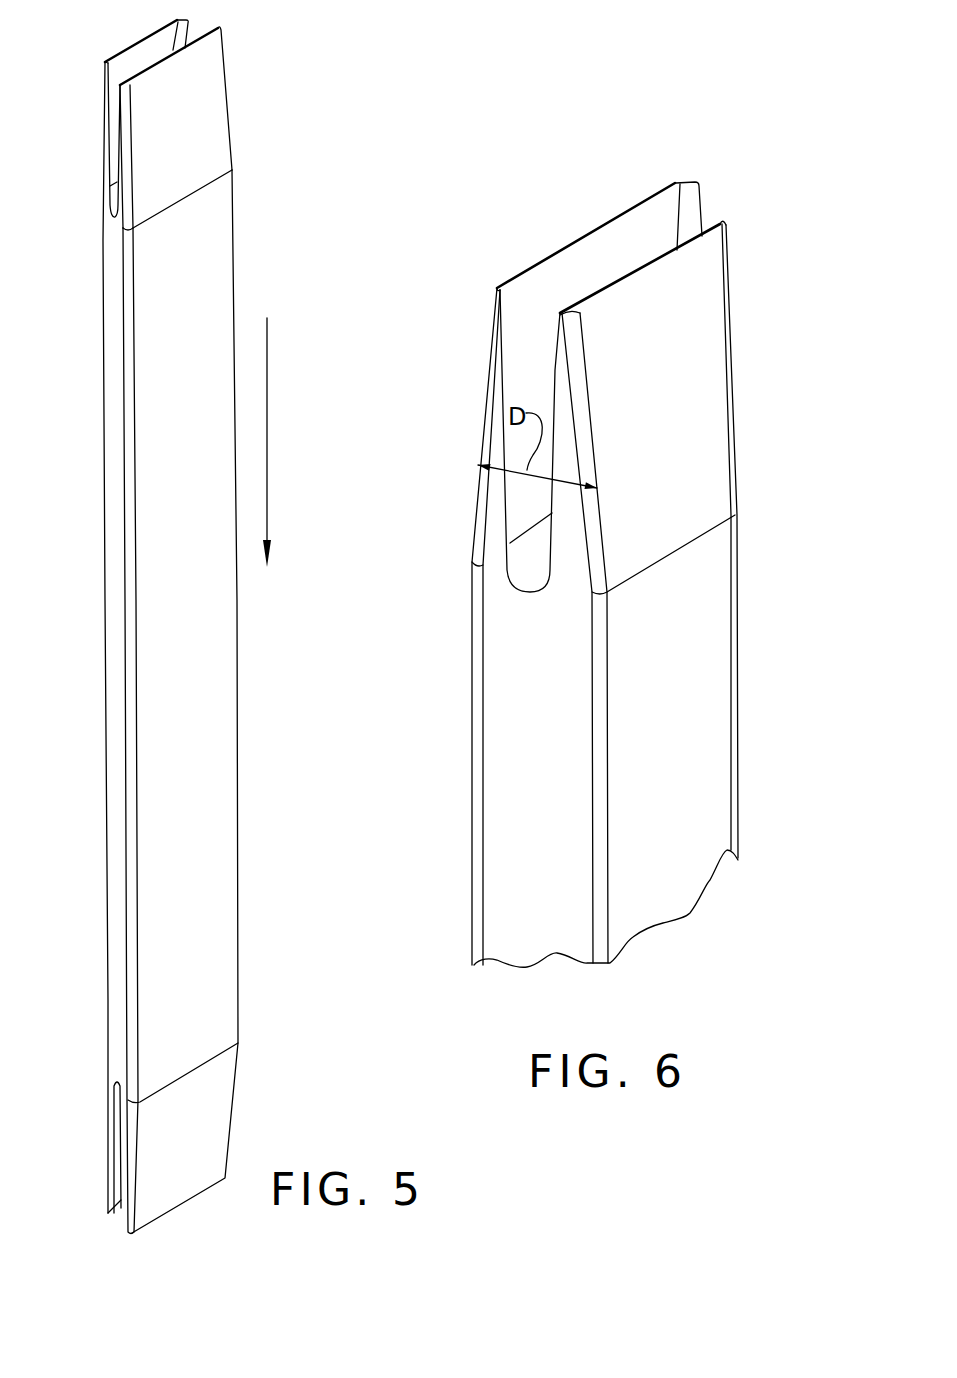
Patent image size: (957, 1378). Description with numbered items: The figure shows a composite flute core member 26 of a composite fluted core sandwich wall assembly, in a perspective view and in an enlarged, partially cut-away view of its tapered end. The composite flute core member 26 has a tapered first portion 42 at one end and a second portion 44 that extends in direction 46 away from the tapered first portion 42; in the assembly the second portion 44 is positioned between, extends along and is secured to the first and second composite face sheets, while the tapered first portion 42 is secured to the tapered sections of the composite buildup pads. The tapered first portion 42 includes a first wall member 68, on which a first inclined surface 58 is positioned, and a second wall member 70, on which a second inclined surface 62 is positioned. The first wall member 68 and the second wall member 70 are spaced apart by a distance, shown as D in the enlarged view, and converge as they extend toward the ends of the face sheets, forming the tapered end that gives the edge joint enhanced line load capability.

In FIG. 5, the composite flute core member 26 is at (205, 745).
In FIG. 6, the composite flute core member 26 is at (696, 742).
In FIG. 5, the tapered first portion 42 is at (226, 22).
In FIG. 6, the tapered first portion 42 is at (760, 220).
In FIG. 5, the second portion 44 is at (82, 228).
In FIG. 6, the second portion 44 is at (447, 562).
In FIG. 5, the direction 46 is at (267, 458).
In FIG. 5, the first inclined surface 58 is at (102, 122).
In FIG. 6, the first inclined surface 58 is at (482, 413).
In FIG. 5, the second inclined surface 62 is at (207, 158).
In FIG. 6, the second inclined surface 62 is at (708, 257).
In FIG. 5, the first wall member 68 is at (127, 50).
In FIG. 6, the first wall member 68 is at (578, 240).
In FIG. 5, the second wall member 70 is at (148, 62).
In FIG. 6, the second wall member 70 is at (655, 263).